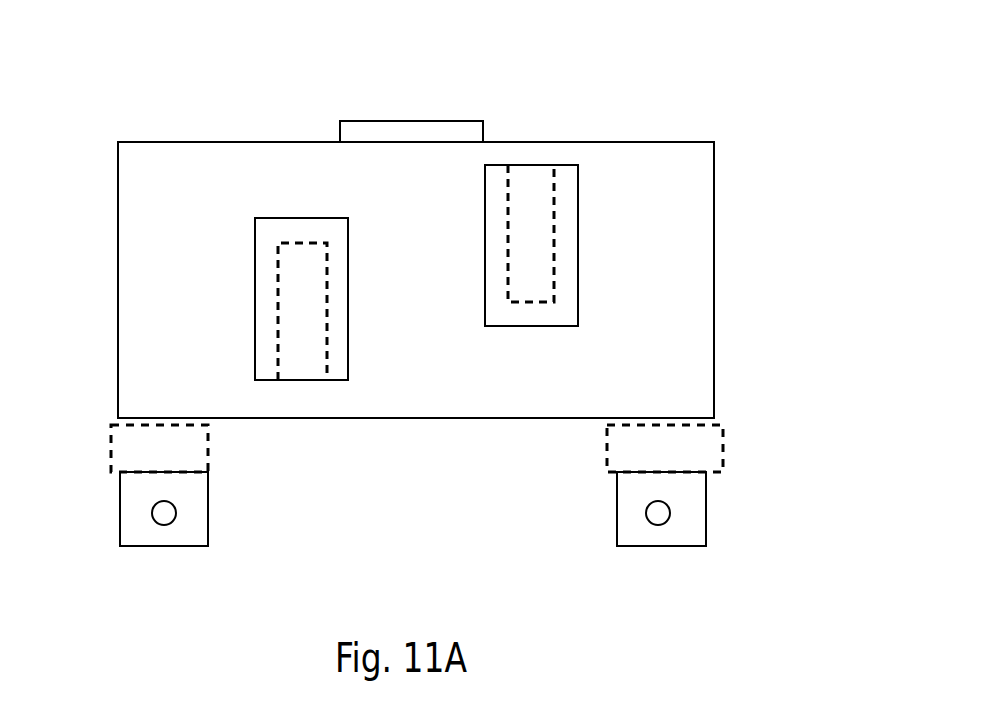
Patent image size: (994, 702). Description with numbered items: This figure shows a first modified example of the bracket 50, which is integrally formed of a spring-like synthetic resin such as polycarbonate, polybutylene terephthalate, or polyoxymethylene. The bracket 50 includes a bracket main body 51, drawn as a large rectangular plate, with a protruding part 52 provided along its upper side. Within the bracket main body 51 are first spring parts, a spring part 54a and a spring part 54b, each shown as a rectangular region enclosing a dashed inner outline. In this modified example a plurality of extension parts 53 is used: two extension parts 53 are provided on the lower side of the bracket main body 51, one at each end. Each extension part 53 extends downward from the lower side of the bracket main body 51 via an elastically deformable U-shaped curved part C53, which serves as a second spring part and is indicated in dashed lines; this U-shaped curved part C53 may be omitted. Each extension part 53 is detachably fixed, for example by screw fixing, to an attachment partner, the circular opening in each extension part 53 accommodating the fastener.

The bracket 50 is at (511, 88).
The bracket main body 51 is at (255, 142).
The protruding part 52 is at (422, 121).
The extension part 53 is at (166, 546).
The spring part 54a is at (278, 300).
The spring part 54b is at (542, 241).
The U-shaped curved part C53 is at (111, 448).